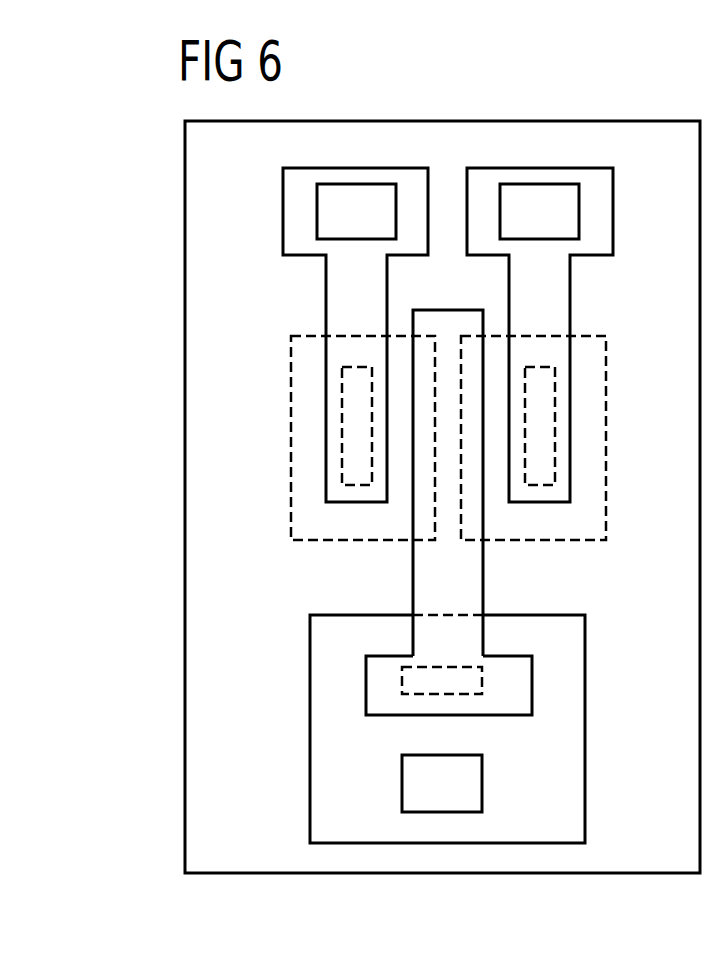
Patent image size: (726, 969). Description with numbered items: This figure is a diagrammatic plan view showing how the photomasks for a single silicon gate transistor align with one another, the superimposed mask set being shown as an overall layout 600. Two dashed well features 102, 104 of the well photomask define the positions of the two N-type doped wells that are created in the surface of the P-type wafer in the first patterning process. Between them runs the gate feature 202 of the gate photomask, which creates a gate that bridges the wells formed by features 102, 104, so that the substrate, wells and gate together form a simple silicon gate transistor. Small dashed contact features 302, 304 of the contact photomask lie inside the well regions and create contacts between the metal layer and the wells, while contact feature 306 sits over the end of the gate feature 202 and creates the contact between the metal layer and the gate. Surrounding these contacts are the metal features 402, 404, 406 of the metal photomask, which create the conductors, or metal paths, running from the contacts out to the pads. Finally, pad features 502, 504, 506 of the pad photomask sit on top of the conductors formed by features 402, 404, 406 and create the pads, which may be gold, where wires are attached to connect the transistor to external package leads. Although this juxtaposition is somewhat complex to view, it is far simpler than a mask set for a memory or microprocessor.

The semiconductor device layout 600 is at (145, 139).
The well photomask feature 102 is at (302, 474).
The well photomask feature 104 is at (604, 473).
The gate photomask feature 202 is at (466, 558).
The contact photomask feature 302 is at (342, 417).
The contact photomask feature 304 is at (555, 418).
The contact photomask feature 306 is at (421, 690).
The metal photomask feature 402 is at (340, 297).
The metal photomask feature 404 is at (558, 292).
The metal photomask feature 406 is at (573, 724).
The pad photomask feature 502 is at (329, 207).
The pad photomask feature 504 is at (566, 208).
The pad photomask feature 506 is at (470, 779).